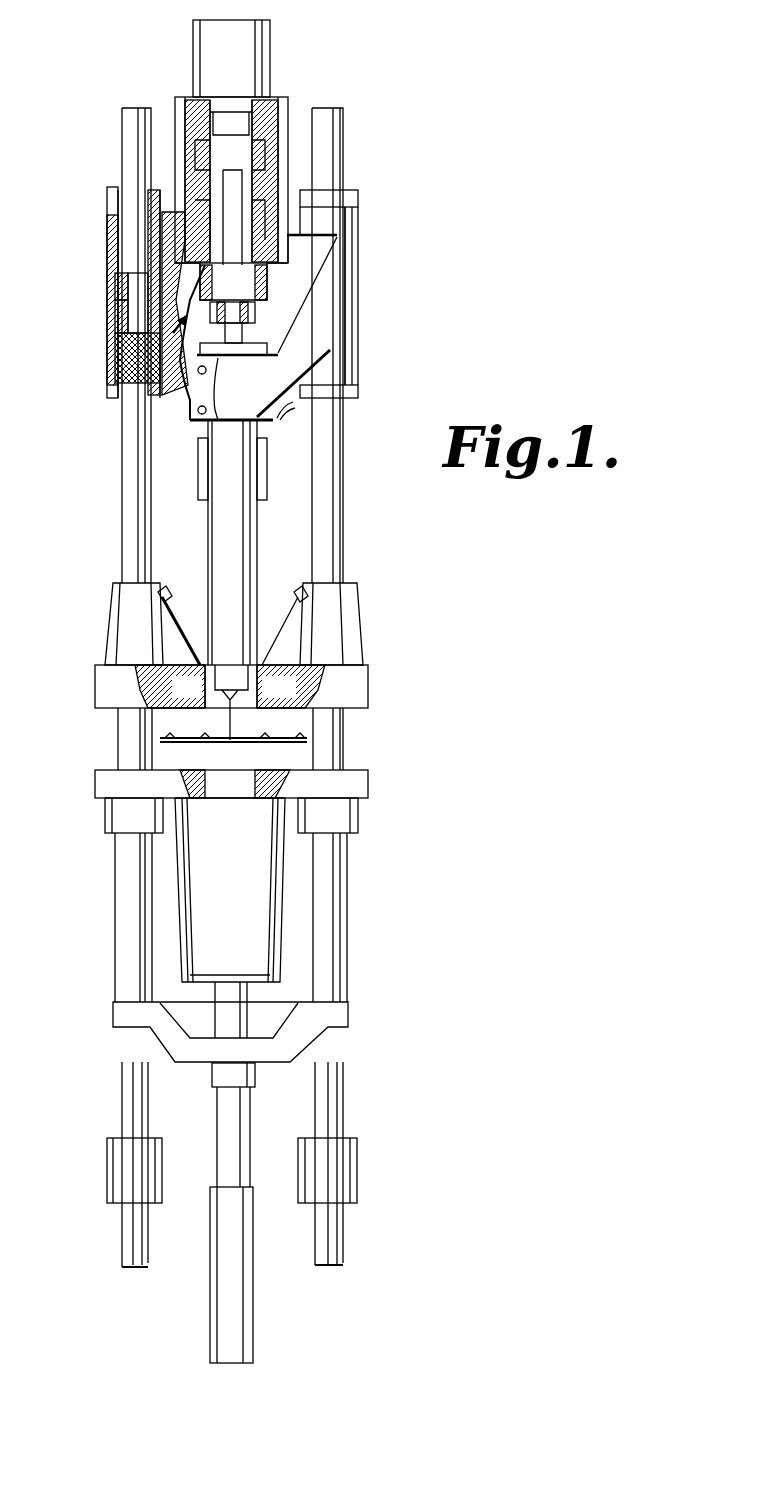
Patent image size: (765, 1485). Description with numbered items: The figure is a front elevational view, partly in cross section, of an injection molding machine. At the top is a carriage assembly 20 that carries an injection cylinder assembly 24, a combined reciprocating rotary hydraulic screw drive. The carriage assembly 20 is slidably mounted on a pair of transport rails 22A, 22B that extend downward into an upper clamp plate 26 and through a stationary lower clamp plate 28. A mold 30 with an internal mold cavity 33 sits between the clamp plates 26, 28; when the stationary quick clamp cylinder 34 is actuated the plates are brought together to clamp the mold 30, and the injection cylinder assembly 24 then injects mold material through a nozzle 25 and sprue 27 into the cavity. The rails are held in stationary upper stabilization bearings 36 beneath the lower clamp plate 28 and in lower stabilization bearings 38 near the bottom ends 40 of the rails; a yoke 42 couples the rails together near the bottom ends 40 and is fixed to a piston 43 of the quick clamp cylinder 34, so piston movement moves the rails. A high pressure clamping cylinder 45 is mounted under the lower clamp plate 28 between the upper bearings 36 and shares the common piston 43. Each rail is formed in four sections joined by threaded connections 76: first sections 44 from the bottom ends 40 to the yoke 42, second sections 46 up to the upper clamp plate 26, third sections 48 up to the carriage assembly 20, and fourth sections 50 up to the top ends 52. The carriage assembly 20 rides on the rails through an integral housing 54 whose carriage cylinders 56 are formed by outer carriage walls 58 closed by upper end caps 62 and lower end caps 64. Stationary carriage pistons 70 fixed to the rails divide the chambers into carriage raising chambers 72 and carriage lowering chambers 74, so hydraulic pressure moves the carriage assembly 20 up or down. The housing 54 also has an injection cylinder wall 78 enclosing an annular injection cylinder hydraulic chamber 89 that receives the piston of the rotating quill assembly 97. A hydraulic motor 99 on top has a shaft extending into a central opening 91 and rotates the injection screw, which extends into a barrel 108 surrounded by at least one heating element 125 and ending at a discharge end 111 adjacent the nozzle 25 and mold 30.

The carriage assembly 20 is at (452, 211).
The transport rail 22A is at (343, 132).
The transport rail 22B is at (101, 326).
The injection cylinder assembly 24 is at (229, 193).
The nozzle 25 is at (291, 686).
The upper clamp plate 26 is at (250, 699).
The sprue 27 is at (170, 686).
The lower clamp plate 28 is at (368, 786).
The mold 30 is at (450, 742).
The mold cavity 33 is at (252, 740).
The quick clamp cylinder 34 is at (243, 1345).
The upper stabilization bearings 36 is at (358, 823).
The lower stabilization bearings 38 is at (113, 1170).
The bottom ends 40 is at (130, 1262).
The yoke 42 is at (348, 1012).
The piston 43 is at (233, 1133).
The first sections 44 is at (122, 1076).
The high pressure clamping cylinder 45 is at (268, 923).
The second sections 46 is at (118, 873).
The third sections 48 is at (122, 545).
The fourth sections 50 is at (130, 252).
The top ends 52 is at (130, 113).
The integral injection cylinder and carriage cylinder housing 54 is at (312, 340).
The carriage cylinders 56 is at (350, 290).
The outer cylindrical carriage walls 58 is at (130, 327).
The upper carriage cylinder end caps 62 is at (358, 197).
The lower carriage cylinder end caps 64 is at (358, 394).
The carriage pistons 70 is at (115, 288).
The carriage raising chambers 72 is at (108, 233).
The carriage lowering chambers 74 is at (113, 313).
The threaded connections 76 is at (150, 353).
The injection cylinder wall 78 is at (290, 133).
The injection cylinder hydraulic chamber 89 is at (192, 158).
The central opening 91 is at (237, 140).
The rotating quill assembly 97 is at (160, 358).
The hydraulic motor 99 is at (207, 32).
The barrel 108 is at (245, 533).
The discharge end 111 is at (228, 650).
The heating element 125 is at (265, 465).